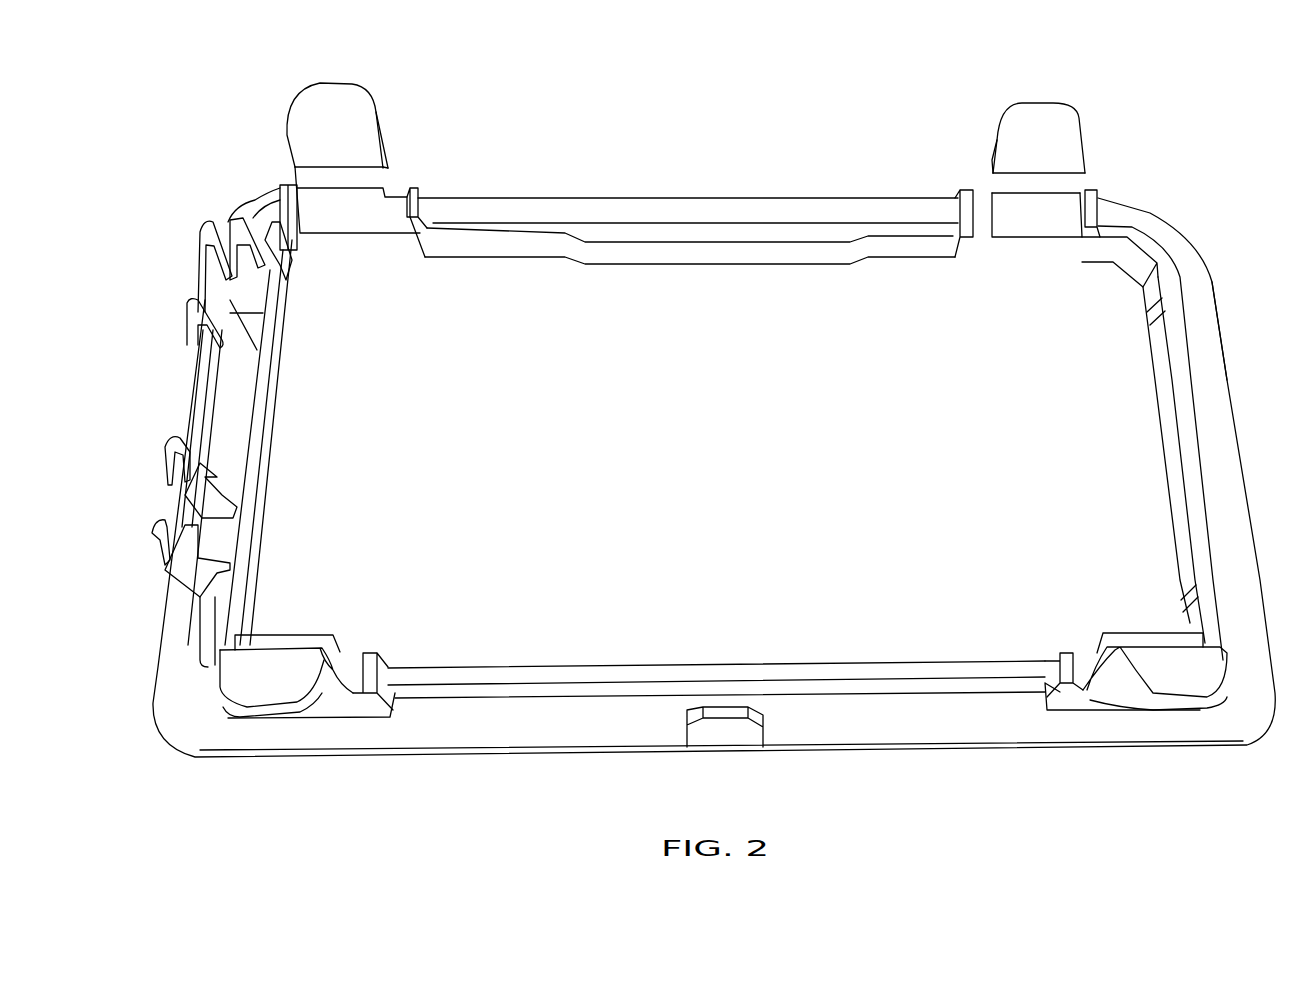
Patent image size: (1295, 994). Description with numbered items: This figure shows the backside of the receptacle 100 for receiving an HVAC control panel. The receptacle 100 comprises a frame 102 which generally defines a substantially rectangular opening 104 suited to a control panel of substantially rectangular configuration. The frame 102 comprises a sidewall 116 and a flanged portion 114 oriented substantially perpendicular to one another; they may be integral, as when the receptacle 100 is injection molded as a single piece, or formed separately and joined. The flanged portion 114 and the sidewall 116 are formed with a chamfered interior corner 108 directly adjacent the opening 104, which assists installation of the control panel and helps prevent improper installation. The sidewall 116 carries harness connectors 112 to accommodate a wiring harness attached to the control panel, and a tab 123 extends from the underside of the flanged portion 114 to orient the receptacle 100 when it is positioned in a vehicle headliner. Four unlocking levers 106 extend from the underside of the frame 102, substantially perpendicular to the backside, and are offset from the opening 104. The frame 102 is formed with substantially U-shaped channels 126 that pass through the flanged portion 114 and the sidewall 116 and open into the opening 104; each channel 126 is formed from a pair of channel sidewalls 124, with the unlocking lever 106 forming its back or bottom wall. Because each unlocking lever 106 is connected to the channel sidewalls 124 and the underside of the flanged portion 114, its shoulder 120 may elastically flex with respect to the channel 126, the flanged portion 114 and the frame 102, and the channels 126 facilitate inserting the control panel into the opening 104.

The receptacle 100 is at (799, 140).
The frame 102 is at (1170, 213).
The opening 104 is at (733, 465).
The unlocking lever 106 is at (328, 92).
The chamfered interior corner 108 is at (1128, 283).
The harness connector 112 is at (258, 288).
The flanged portion 114 is at (1236, 440).
The sidewall 116 is at (698, 262).
The shoulder 120 is at (358, 192).
The tab 123 is at (725, 742).
The channel sidewall 124 is at (285, 200).
The U-shaped channel 126 is at (349, 258).